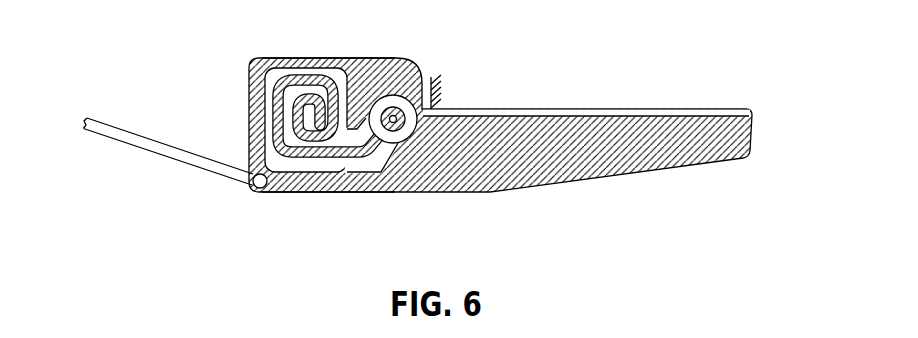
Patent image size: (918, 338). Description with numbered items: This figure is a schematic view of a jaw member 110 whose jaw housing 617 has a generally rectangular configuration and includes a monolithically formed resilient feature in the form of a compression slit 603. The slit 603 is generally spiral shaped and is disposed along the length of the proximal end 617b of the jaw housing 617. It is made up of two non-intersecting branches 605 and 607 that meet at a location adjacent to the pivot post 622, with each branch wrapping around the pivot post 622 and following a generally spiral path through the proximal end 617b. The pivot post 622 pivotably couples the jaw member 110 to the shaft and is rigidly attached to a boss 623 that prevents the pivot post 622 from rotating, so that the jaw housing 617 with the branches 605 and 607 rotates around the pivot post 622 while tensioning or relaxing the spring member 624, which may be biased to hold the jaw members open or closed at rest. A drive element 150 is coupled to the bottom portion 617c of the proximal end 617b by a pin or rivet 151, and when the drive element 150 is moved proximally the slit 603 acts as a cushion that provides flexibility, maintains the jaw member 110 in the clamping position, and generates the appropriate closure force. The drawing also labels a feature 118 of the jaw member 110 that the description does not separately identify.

The jaw member 110 is at (453, 141).
The top surface layer 118 is at (733, 110).
The drive element 150 is at (140, 130).
The pin or rivet 151 is at (259, 189).
The compression slit 603 is at (284, 56).
The branch 605 is at (393, 118).
The branch 607 is at (405, 143).
The jaw housing 617 is at (744, 157).
The proximal end 617b is at (303, 58).
The bottom portion 617c is at (274, 192).
The pivot post 622 is at (414, 71).
The boss 623 is at (397, 116).
The spring member 624 is at (347, 168).